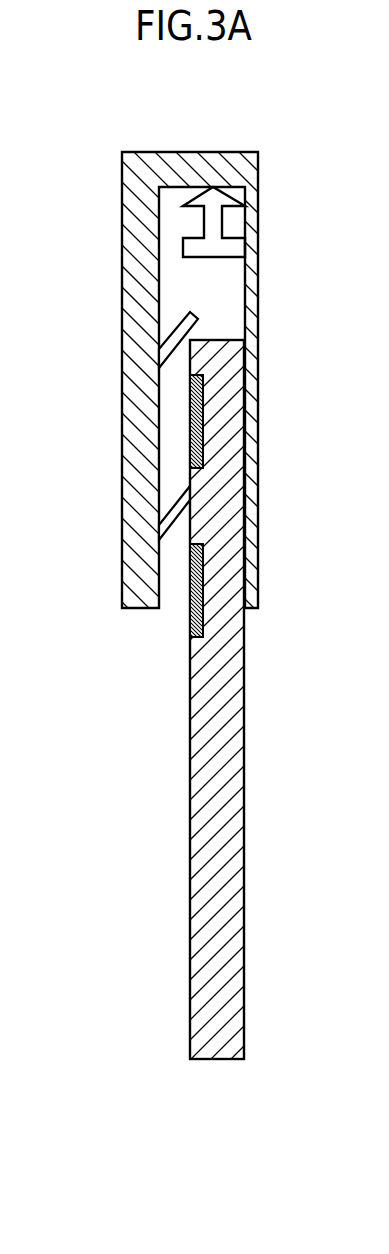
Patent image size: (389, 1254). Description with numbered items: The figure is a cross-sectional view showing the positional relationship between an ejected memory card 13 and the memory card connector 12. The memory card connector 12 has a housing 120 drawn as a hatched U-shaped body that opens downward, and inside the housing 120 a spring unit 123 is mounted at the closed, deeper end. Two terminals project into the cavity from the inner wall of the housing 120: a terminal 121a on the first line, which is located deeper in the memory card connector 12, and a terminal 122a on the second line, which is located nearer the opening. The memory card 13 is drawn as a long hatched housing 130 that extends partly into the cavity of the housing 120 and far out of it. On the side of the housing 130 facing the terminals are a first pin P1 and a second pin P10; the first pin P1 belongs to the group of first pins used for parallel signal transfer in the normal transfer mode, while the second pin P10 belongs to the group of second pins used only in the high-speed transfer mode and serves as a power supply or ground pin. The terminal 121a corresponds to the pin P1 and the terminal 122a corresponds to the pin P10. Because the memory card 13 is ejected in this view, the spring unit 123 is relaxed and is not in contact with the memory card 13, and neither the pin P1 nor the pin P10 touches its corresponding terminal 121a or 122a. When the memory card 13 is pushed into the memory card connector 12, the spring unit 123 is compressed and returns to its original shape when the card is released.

The memory card connector 12 is at (96, 160).
The housing 120 is at (259, 162).
The terminal on first line 121a is at (170, 333).
The terminal on second line 122a is at (168, 505).
The spring unit 123 is at (224, 222).
The memory card 13 is at (176, 1004).
The housing 130 is at (245, 947).
The first pin P1 is at (207, 400).
The second pin P10 is at (206, 590).